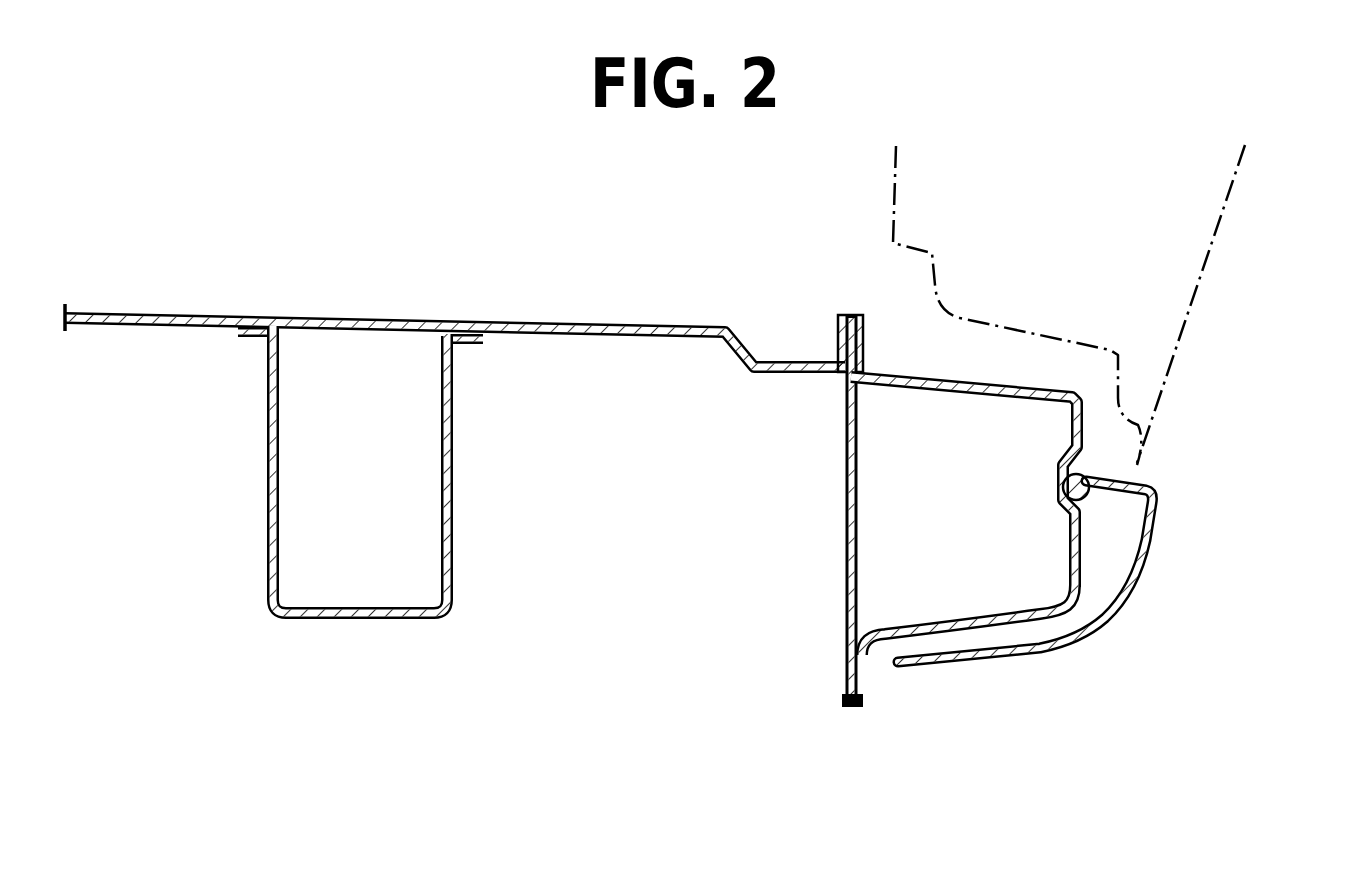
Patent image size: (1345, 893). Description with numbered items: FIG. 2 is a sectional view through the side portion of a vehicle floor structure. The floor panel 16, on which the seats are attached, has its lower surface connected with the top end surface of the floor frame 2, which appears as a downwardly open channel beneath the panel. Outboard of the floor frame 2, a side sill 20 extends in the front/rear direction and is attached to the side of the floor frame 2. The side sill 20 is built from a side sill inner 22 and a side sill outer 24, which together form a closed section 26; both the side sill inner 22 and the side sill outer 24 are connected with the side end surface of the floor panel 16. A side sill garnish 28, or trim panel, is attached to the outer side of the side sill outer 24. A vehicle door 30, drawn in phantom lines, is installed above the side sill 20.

The floor frame 2 is at (452, 578).
The floor panel 16 is at (558, 322).
The side sill 20 is at (921, 686).
The side sill inner 22 is at (845, 552).
The side sill outer 24 is at (1020, 625).
The closed section 26 is at (902, 592).
The side sill garnish 28 is at (1120, 605).
The vehicle door 30 is at (1232, 200).